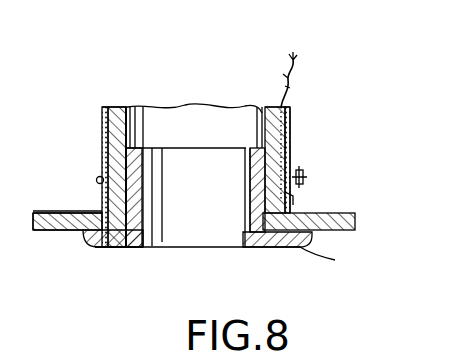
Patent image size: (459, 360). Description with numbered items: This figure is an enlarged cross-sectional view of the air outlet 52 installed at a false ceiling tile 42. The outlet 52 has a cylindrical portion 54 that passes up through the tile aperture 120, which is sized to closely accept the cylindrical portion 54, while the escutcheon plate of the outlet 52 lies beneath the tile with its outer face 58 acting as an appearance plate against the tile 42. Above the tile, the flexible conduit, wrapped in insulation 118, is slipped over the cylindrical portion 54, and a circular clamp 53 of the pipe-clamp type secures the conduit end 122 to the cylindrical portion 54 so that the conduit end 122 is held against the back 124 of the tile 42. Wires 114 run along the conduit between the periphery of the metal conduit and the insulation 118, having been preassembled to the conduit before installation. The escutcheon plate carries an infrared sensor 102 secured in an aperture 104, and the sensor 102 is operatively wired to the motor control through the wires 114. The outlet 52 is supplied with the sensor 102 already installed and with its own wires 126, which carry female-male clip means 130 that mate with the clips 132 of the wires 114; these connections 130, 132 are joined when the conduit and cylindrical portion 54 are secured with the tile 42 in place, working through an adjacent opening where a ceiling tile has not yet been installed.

The ceiling tile 42 is at (64, 232).
The air outlet 52 is at (102, 260).
The clamp 53 is at (305, 175).
The cylindrical portion 54 is at (291, 142).
The outer face 58 is at (133, 249).
The infrared sensor 102 is at (278, 249).
The aperture 104 is at (280, 248).
The wires 114 is at (287, 93).
The insulation 118 is at (101, 117).
The tile aperture 120 is at (268, 229).
The conduit end 122 is at (96, 196).
The back 124 is at (52, 211).
The wires 126 is at (246, 228).
The female-male clip means 130 is at (293, 205).
The clips 132 is at (293, 193).